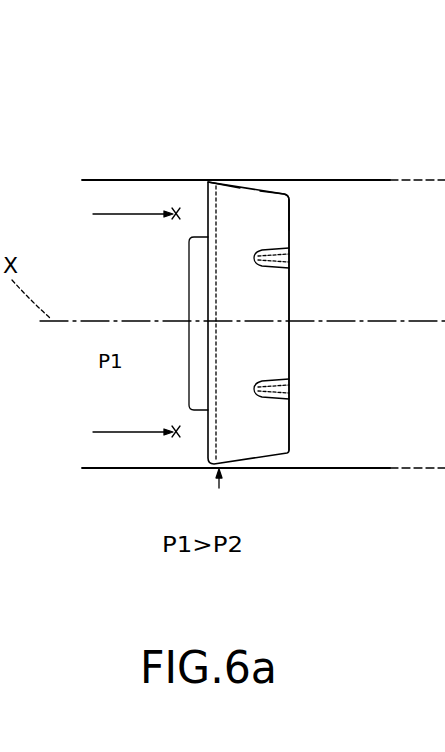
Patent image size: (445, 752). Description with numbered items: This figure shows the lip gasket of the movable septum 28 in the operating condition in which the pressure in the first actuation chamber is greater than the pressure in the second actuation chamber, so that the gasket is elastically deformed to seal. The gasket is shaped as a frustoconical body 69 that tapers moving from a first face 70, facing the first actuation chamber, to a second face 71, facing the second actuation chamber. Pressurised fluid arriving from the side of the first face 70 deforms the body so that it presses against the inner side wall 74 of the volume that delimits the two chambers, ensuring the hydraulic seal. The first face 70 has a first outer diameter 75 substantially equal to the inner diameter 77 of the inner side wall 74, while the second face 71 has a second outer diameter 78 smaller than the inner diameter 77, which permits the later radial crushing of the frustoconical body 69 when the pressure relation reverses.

The movable septum 28 is at (232, 387).
The frustoconical body 69 is at (245, 202).
The first face 70 is at (182, 273).
The second face 71 is at (298, 295).
The inner side wall 74 is at (331, 185).
The first outer diameter 75 is at (208, 176).
The inner diameter 77 is at (390, 180).
The second outer diameter 78 is at (288, 186).